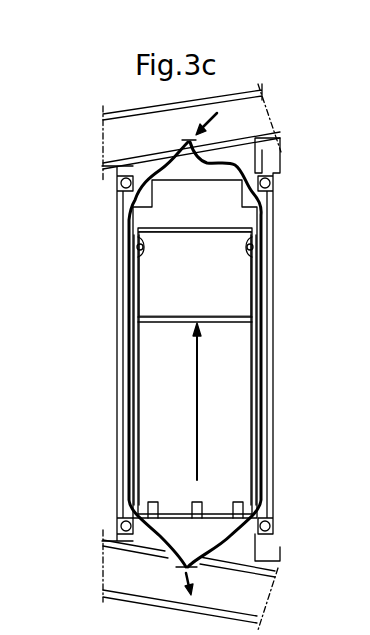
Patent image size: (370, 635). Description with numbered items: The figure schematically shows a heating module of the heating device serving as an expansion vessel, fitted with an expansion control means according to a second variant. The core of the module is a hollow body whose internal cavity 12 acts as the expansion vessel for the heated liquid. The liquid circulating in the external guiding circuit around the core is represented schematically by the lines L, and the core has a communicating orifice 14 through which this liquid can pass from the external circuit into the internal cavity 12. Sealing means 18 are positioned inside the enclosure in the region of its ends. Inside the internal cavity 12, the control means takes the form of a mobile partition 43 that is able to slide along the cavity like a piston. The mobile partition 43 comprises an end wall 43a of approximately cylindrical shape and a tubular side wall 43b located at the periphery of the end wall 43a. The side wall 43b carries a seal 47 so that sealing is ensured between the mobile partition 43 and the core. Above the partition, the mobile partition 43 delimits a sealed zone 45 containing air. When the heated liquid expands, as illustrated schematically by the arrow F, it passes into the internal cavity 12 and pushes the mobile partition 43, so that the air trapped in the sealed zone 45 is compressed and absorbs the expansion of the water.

The internal cavity 12 is at (238, 220).
The communicating orifice 14 is at (128, 508).
The sealing means 18 is at (266, 527).
The mobile partition 43 is at (215, 325).
The end wall 43a is at (148, 300).
The tubular side wall 43b is at (252, 272).
The sealed zone 45 is at (238, 298).
The seal 47 is at (133, 248).
The lines representing the liquid L is at (236, 160).
The arrow F is at (184, 401).